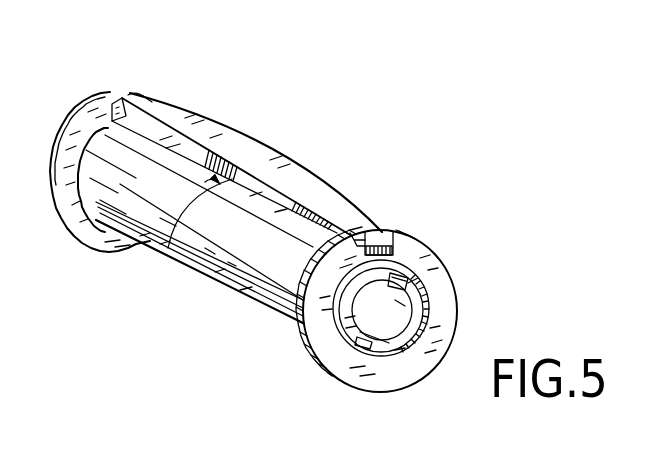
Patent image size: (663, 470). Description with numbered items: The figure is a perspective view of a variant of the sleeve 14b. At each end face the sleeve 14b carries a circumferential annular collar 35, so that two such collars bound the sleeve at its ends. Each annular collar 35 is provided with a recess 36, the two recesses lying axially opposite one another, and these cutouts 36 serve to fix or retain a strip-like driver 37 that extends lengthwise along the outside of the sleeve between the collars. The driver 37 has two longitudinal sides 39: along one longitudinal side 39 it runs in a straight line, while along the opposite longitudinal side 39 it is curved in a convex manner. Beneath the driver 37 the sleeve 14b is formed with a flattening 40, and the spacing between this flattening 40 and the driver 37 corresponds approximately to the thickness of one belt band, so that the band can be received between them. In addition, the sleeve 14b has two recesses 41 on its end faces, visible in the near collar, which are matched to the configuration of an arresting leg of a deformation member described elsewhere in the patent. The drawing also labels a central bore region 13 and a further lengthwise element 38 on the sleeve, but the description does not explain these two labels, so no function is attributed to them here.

The bore 13 is at (387, 318).
The sleeve 14b is at (190, 275).
The annular collar 35 is at (76, 212).
The recess 36 is at (121, 94).
The strip-like driver 37 is at (223, 138).
The guide bar 38 is at (250, 187).
The longitudinal side 39 is at (283, 152).
The flattening 40 is at (170, 253).
The recess 41 is at (418, 322).